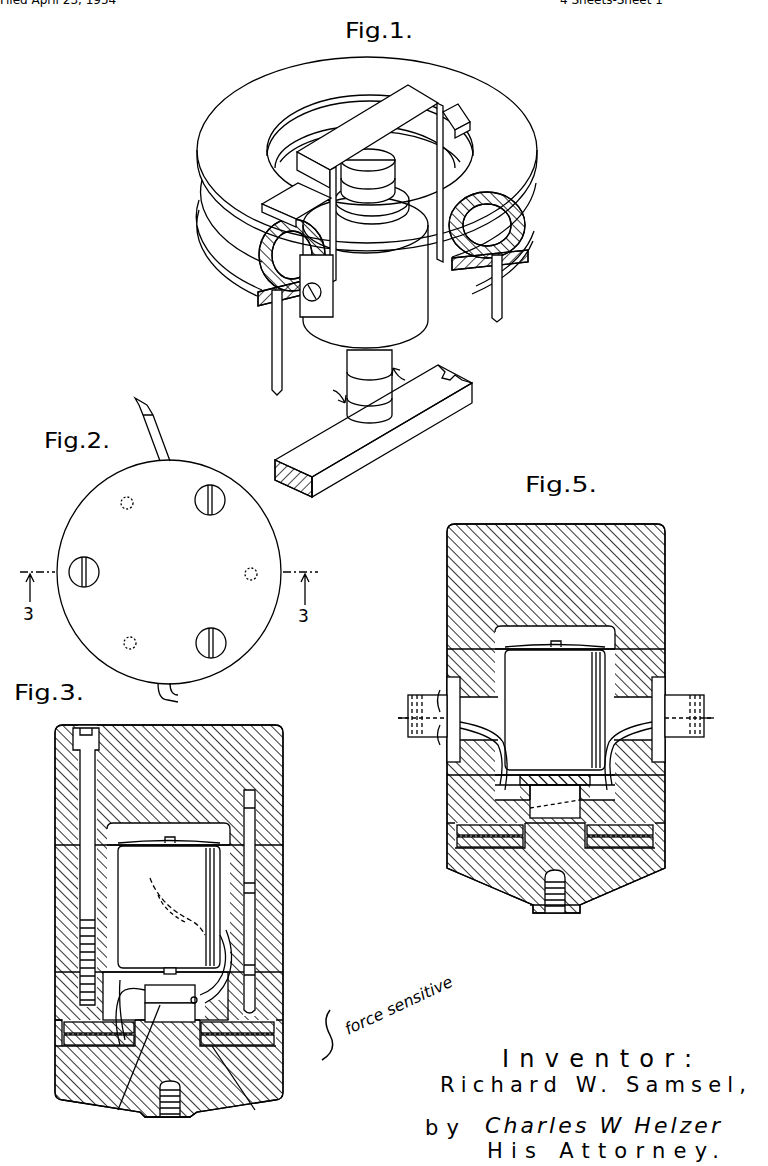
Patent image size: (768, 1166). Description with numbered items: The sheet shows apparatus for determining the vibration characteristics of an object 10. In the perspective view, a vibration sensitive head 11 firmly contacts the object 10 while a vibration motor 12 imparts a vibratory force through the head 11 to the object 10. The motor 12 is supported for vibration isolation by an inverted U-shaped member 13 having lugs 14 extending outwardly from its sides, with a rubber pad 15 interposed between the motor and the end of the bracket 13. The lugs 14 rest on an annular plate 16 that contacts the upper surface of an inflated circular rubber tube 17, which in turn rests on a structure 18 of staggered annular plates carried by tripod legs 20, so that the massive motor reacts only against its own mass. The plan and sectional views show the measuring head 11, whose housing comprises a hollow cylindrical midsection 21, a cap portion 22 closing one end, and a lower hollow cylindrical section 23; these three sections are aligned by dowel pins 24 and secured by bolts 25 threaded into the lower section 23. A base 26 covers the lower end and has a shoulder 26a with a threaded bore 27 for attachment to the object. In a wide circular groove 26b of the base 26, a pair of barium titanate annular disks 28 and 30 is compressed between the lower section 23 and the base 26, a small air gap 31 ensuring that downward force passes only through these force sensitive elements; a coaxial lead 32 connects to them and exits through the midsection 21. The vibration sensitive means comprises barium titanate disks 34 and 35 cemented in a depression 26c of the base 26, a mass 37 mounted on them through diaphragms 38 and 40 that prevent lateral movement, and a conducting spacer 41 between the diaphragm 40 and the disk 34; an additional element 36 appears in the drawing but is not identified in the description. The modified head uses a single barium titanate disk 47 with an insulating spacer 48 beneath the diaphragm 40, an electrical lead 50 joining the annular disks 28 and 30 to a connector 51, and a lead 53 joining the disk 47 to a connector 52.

In FIG. 1, the object 10 is at (448, 375).
In FIG. 1, the vibration sensitive head 11 is at (347, 372).
In FIG. 3, the vibration sensitive head 11 is at (310, 722).
In FIG. 1, the vibration motor 12 is at (430, 288).
In FIG. 1, the inverted U-shaped member 13 is at (420, 97).
In FIG. 1, the lugs 14 is at (285, 202).
In FIG. 1, the rubber pad 15 is at (365, 175).
In FIG. 1, the annular plate 16 is at (530, 140).
In FIG. 1, the inflated circular rubber tube 17 is at (525, 212).
In FIG. 1, the structure 18 is at (580, 262).
In FIG. 1, the tripod legs 20 is at (272, 345).
In FIG. 3, the hollow cylindrical midsection 21 is at (283, 880).
In FIG. 5, the hollow cylindrical midsection 21 is at (665, 652).
In FIG. 3, the cap portion 22 is at (283, 780).
In FIG. 5, the cap portion 22 is at (665, 568).
In FIG. 2, the lower hollow cylindrical section 23 is at (72, 522).
In FIG. 3, the lower hollow cylindrical section 23 is at (283, 995).
In FIG. 5, the lower hollow cylindrical section 23 is at (665, 812).
In FIG. 2, the dowel pins 24 is at (132, 497).
In FIG. 3, the dowel pins 24 is at (250, 825).
In FIG. 2, the bolts 25 is at (99, 572).
In FIG. 3, the bolts 25 is at (80, 780).
In FIG. 3, the base 26 is at (65, 1077).
In FIG. 5, the base 26 is at (457, 866).
In FIG. 3, the shoulder 26a is at (155, 1118).
In FIG. 5, the shoulder 26a is at (540, 913).
In FIG. 3, the wide circular groove 26b is at (255, 1110).
In FIG. 3, the depression 26c is at (118, 1110).
In FIG. 3, the threaded bore 27 is at (182, 1112).
In FIG. 5, the threaded bore 27 is at (565, 910).
In FIG. 3, the annular disk 28 is at (278, 1030).
In FIG. 5, the annular disk 28 is at (665, 835).
In FIG. 3, the annular disk 30 is at (278, 1042).
In FIG. 5, the annular disk 30 is at (665, 845).
In FIG. 3, the air gap 31 is at (58, 1018).
In FIG. 2, the coaxial electrical lead 32 is at (182, 700).
In FIG. 3, the coaxial electrical lead 32 is at (118, 990).
In FIG. 3, the barium titanate ceramic disk 34 is at (170, 994).
In FIG. 3, the barium titanate ceramic disk 35 is at (170, 1012).
In FIG. 2, the lead wire 36 is at (163, 427).
In FIG. 3, the lead wire 36 is at (262, 985).
In FIG. 3, the mass 37 is at (135, 870).
In FIG. 5, the mass 37 is at (605, 655).
In FIG. 3, the diaphragm 38 is at (108, 838).
In FIG. 5, the diaphragm 38 is at (515, 645).
In FIG. 3, the diaphragm 40 is at (68, 968).
In FIG. 5, the diaphragm 40 is at (655, 770).
In FIG. 3, the spacer 41 is at (152, 968).
In FIG. 5, the barium titanate disk 47 is at (572, 785).
In FIG. 5, the insulating spacer 48 is at (525, 775).
In FIG. 5, the electrical lead 50 is at (660, 787).
In FIG. 5, the connector 51 is at (685, 695).
In FIG. 5, the connector 52 is at (415, 695).
In FIG. 5, the lead 53 is at (505, 728).